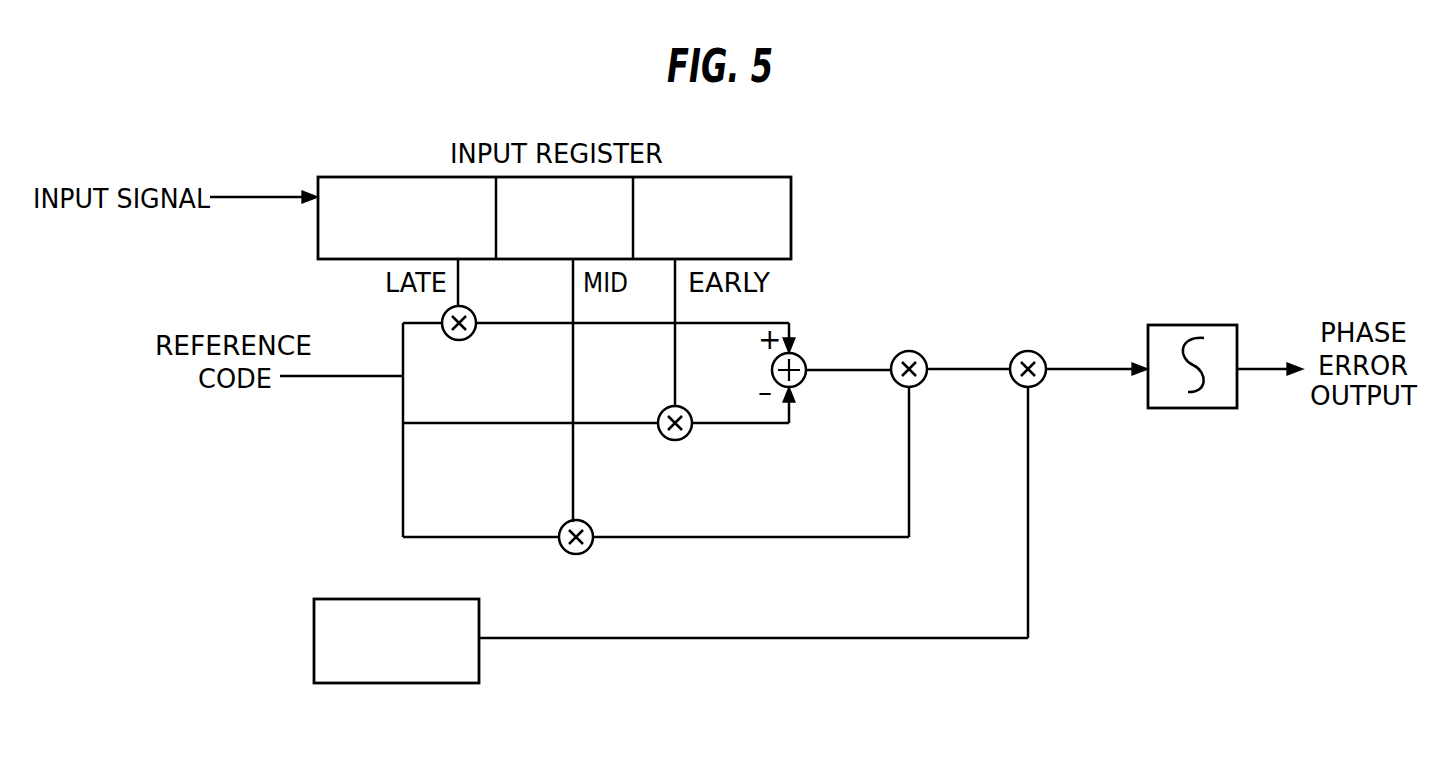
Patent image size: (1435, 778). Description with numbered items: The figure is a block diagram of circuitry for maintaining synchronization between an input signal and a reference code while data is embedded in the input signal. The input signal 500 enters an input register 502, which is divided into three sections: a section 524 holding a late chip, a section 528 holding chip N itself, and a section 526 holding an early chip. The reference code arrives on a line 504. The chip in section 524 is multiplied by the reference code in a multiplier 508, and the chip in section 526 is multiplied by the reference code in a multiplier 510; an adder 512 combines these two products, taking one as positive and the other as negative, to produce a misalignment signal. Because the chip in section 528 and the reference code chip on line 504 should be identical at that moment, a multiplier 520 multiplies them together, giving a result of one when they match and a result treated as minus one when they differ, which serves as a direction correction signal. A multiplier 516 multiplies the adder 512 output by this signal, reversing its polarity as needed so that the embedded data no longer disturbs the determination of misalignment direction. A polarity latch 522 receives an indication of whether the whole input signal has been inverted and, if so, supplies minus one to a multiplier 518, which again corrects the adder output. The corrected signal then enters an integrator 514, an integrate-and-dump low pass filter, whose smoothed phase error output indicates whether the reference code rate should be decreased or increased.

The input signal 500 is at (252, 197).
The input register 502 is at (800, 215).
The line 504 is at (327, 376).
The multiplier 508 is at (468, 337).
The multiplier 510 is at (680, 440).
The adder 512 is at (800, 358).
The integrator 514 is at (1190, 325).
The multiplier 516 is at (920, 355).
The multiplier 518 is at (1039, 355).
The multiplier 520 is at (585, 553).
The polarity latch 522 is at (335, 599).
The section 524 is at (335, 262).
The section 526 is at (780, 262).
The section 528 is at (550, 262).